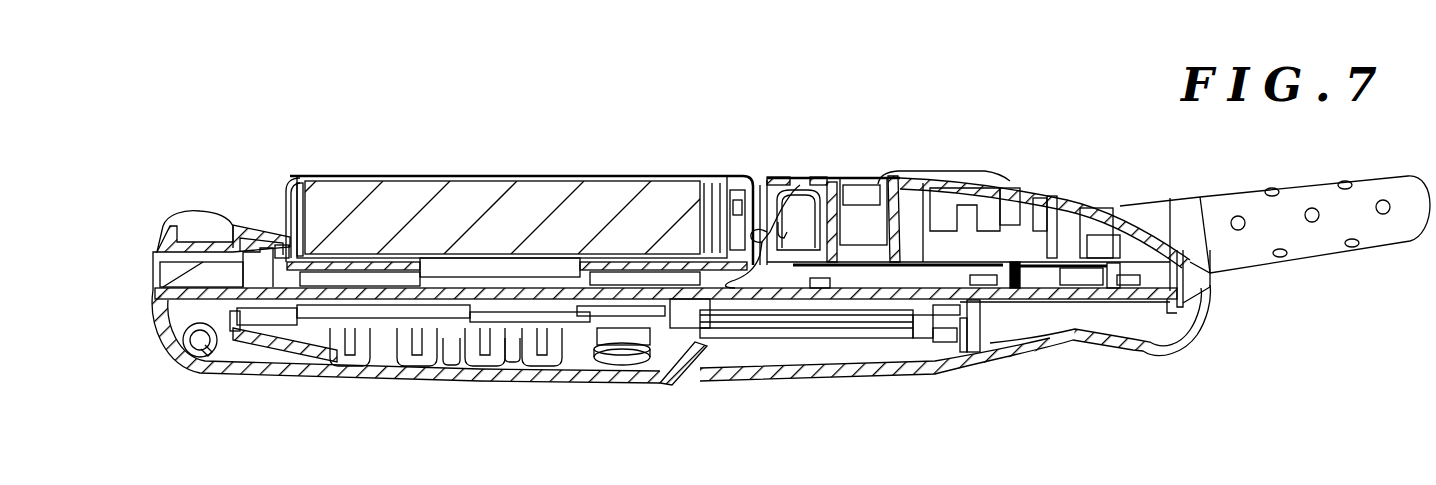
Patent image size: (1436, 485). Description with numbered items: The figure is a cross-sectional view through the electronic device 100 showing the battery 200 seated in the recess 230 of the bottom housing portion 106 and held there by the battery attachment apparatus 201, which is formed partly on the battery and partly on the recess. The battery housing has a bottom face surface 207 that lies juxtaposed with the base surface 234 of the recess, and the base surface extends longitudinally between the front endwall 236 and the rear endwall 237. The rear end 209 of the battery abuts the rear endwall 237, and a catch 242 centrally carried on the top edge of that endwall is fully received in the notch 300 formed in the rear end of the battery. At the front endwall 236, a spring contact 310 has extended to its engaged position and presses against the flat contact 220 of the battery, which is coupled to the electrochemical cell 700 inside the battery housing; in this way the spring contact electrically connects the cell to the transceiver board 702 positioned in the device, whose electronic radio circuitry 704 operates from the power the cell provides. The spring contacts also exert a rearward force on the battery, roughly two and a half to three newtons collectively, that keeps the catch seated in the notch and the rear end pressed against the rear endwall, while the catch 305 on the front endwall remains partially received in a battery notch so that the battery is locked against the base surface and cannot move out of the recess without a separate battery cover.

The electronic device 100 is at (1236, 292).
The bottom housing portion 106 is at (1073, 198).
The battery 200 is at (384, 178).
The battery attachment apparatus 201 is at (775, 157).
The bottom face surface 207 is at (643, 254).
The rear end 209 is at (283, 207).
The flat contact 220 is at (760, 296).
The recess 230 is at (740, 169).
The base surface 234 is at (612, 261).
The front endwall 236 is at (765, 204).
The rear endwall 237 is at (285, 245).
The catch 242 is at (291, 180).
The notch 300 is at (289, 259).
The catch 305 is at (775, 214).
The spring contact 310 is at (800, 197).
The electrochemical cell 700 is at (518, 199).
The transceiver board 702 is at (964, 298).
The electronic radio circuitry 704 is at (381, 303).